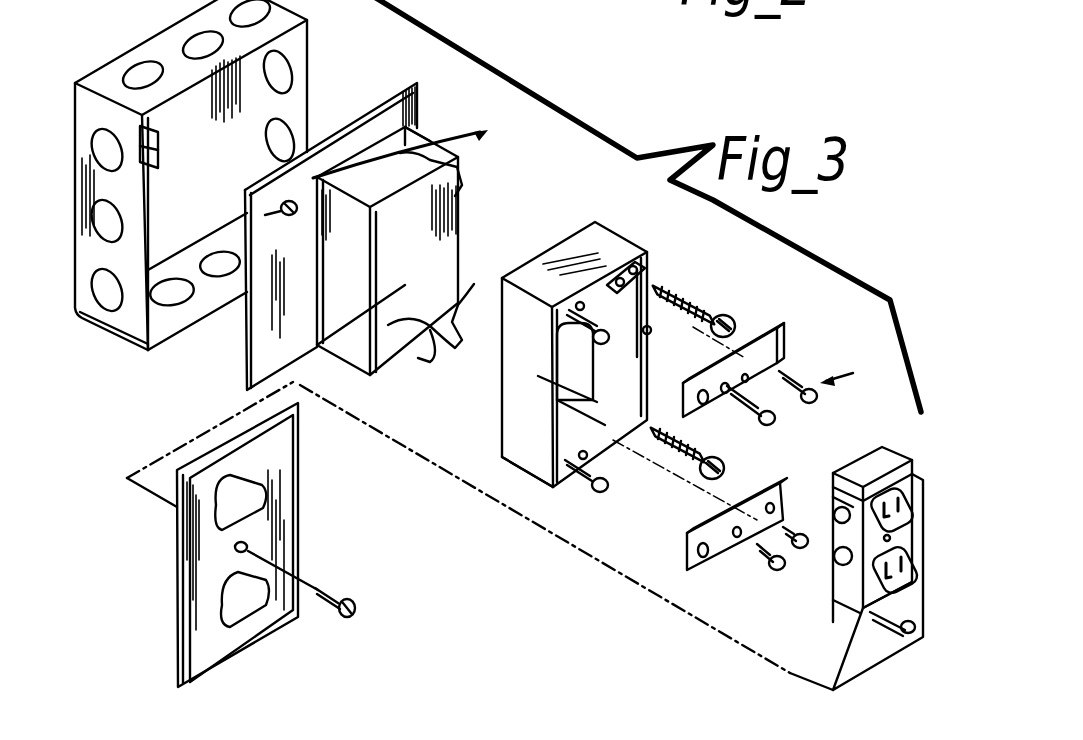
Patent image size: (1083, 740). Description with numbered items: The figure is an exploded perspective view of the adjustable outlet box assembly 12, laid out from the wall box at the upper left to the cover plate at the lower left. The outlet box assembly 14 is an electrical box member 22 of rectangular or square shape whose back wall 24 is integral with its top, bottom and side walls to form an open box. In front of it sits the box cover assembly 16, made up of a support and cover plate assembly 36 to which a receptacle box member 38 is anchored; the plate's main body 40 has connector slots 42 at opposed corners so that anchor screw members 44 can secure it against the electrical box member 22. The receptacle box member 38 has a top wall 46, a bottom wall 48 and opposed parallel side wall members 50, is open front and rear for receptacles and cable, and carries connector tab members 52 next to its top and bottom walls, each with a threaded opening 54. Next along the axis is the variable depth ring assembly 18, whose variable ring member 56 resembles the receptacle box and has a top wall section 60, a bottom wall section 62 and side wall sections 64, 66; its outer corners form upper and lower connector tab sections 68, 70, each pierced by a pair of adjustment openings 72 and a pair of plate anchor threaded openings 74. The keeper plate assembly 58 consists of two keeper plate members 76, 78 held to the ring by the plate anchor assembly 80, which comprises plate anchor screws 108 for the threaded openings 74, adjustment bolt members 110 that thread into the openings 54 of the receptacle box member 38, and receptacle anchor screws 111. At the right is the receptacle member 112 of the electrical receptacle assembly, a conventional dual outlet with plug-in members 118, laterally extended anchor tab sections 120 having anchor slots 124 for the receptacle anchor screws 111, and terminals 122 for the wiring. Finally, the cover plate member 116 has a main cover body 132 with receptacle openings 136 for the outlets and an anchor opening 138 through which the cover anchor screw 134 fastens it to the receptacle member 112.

The adjustable outlet box assembly 12 is at (146, 391).
The outlet box assembly 14 is at (183, 184).
The box cover assembly 16 is at (448, 244).
The variable depth ring assembly 18 is at (603, 354).
The electrical box member 22 is at (120, 318).
The back wall 24 is at (224, 137).
The support and cover plate assembly 36 is at (378, 118).
The receptacle box member 38 is at (353, 167).
The main body 40 is at (293, 236).
The connector slots 42 is at (322, 193).
The anchor screw members 44 is at (262, 212).
The top wall 46 is at (425, 148).
The bottom wall 48 is at (357, 353).
The side wall members 50 is at (485, 225).
The connector tab members 52 is at (478, 192).
The threaded opening 54 is at (462, 303).
The variable ring member 56 is at (620, 240).
The keeper plate assembly 58 is at (775, 356).
The top wall section 60 is at (650, 250).
The bottom wall section 62 is at (552, 379).
The side wall section 64 is at (512, 425).
The side wall section 66 is at (650, 333).
The upper connector tab section 68 is at (583, 282).
The lower connector tab section 70 is at (568, 486).
The adjustment openings 72 is at (596, 374).
The plate anchor threaded openings 74 is at (600, 485).
The keeper plate member 76 is at (780, 357).
The keeper plate member 78 is at (770, 483).
The plate anchor assembly 80 is at (856, 378).
The plate anchor screws 108 is at (814, 406).
The adjustment bolt members 110 is at (722, 312).
The receptacle anchor screws 111 is at (840, 490).
The receptacle member 112 is at (840, 600).
The cover plate member 116 is at (265, 543).
The plug-in members 118 is at (875, 608).
The anchor tab sections 120 is at (841, 553).
The terminals 122 is at (847, 565).
The anchor slots 124 is at (863, 470).
The main cover body 132 is at (282, 528).
The cover anchor screw 134 is at (347, 600).
The receptacle openings 136 is at (242, 487).
The anchor opening 138 is at (187, 623).